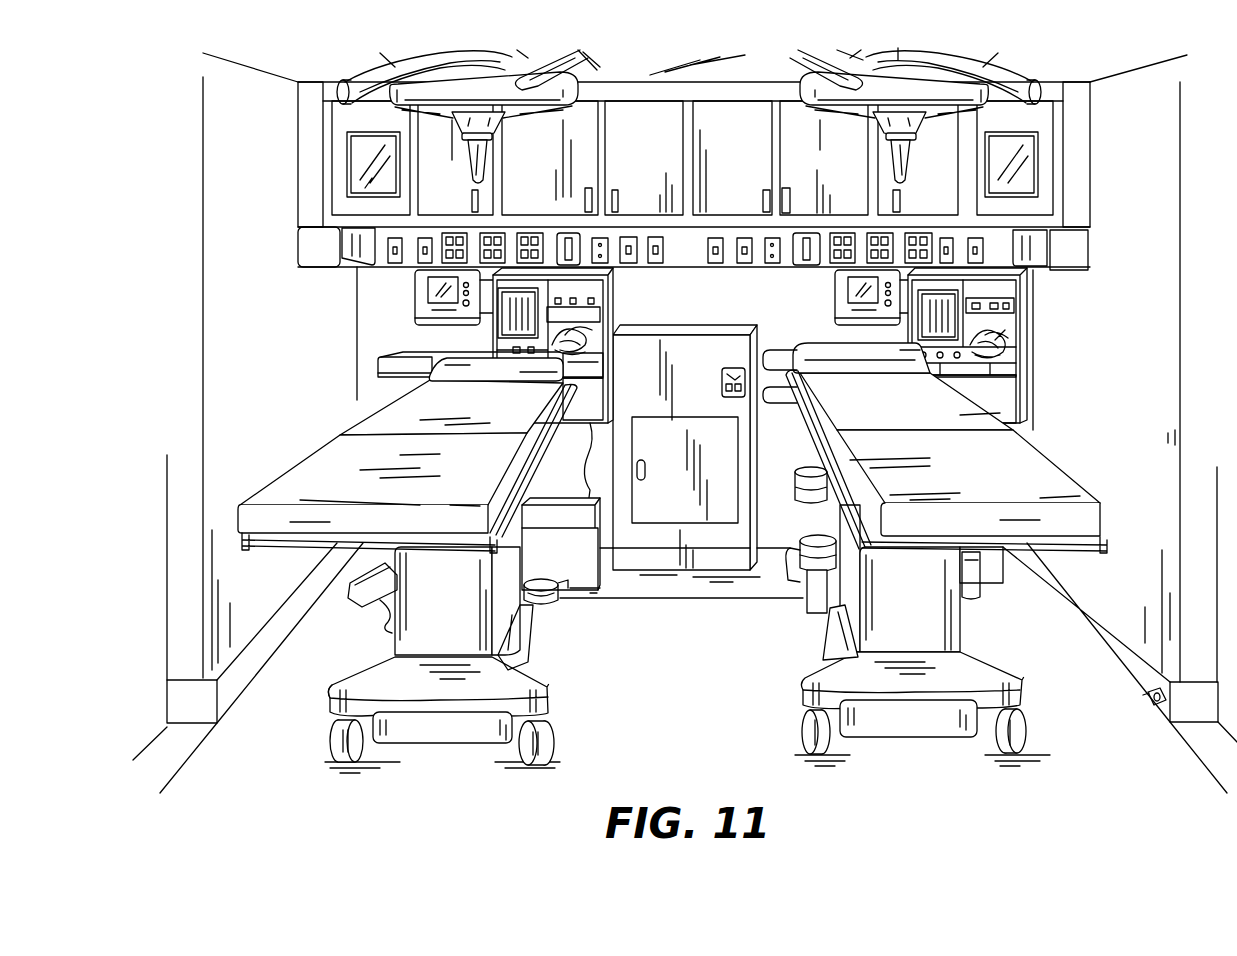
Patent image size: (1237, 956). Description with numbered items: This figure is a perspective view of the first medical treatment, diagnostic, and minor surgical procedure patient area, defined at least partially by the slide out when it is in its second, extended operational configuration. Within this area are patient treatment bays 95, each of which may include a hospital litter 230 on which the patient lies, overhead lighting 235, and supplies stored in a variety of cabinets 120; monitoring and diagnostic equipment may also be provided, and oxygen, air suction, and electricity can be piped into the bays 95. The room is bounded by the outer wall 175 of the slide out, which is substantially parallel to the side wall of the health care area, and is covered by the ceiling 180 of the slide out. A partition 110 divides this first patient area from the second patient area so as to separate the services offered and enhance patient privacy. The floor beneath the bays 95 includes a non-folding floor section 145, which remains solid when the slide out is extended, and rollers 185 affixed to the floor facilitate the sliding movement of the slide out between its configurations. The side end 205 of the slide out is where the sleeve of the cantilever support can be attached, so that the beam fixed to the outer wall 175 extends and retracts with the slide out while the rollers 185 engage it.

The patient treatment bay 95 is at (672, 544).
The partition 110 is at (258, 600).
The cabinets 120 is at (300, 152).
The non-folding floor section 145 is at (633, 588).
The outer wall 175 is at (370, 292).
The ceiling 180 is at (723, 73).
The rollers 185 is at (1143, 707).
The side end 205 is at (1113, 595).
The hospital litter 230 is at (327, 460).
The lighting 235 is at (863, 117).